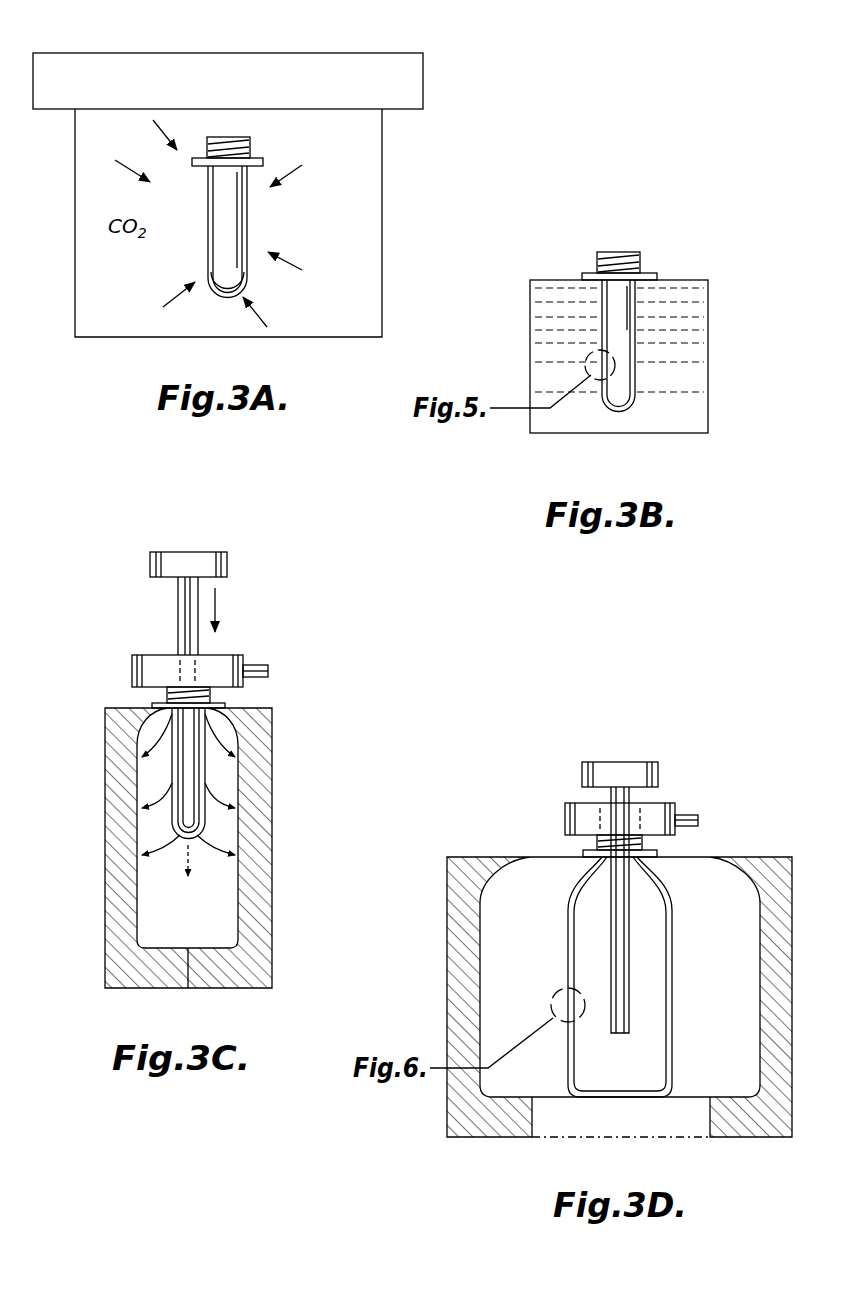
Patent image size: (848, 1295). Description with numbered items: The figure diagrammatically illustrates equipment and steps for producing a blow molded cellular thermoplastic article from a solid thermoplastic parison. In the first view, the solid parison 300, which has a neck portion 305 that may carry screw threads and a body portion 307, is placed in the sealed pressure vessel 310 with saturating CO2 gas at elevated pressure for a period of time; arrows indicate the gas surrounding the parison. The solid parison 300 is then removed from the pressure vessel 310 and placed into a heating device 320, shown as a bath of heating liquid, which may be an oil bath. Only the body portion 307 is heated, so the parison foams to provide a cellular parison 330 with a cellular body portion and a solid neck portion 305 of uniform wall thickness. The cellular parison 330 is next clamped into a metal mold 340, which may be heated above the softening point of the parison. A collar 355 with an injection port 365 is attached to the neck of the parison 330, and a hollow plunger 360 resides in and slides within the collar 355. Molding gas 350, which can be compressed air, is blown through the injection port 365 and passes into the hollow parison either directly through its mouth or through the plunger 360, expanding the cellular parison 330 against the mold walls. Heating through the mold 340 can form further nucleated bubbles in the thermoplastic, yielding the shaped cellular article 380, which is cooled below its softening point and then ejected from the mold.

In FIG. 3A, the solid parison 300 is at (247, 208).
In FIG. 3A, the neck portion 305 is at (250, 140).
In FIG. 3B, the neck portion 305 is at (640, 256).
In FIG. 3A, the body portion 307 is at (247, 267).
In FIG. 3B, the body portion 307 is at (636, 351).
In FIG. 3A, the sealed pressure vessel 310 is at (382, 180).
In FIG. 3B, the heating device 320 is at (703, 303).
In FIG. 3B, the cellular parison 330 is at (603, 336).
In FIG. 3C, the cellular parison 330 is at (207, 772).
In FIG. 3D, the cellular parison 330 is at (447, 963).
In FIG. 3C, the metal mold 340 is at (273, 817).
In FIG. 3C, the molding gas 350 is at (304, 656).
In FIG. 3C, the collar 355 is at (227, 653).
In FIG. 3C, the hollow plunger 360 is at (178, 594).
In FIG. 3D, the hollow plunger 360 is at (629, 793).
In FIG. 3C, the injection port 365 is at (262, 662).
In FIG. 3D, the shaped cellular article 380 is at (674, 945).